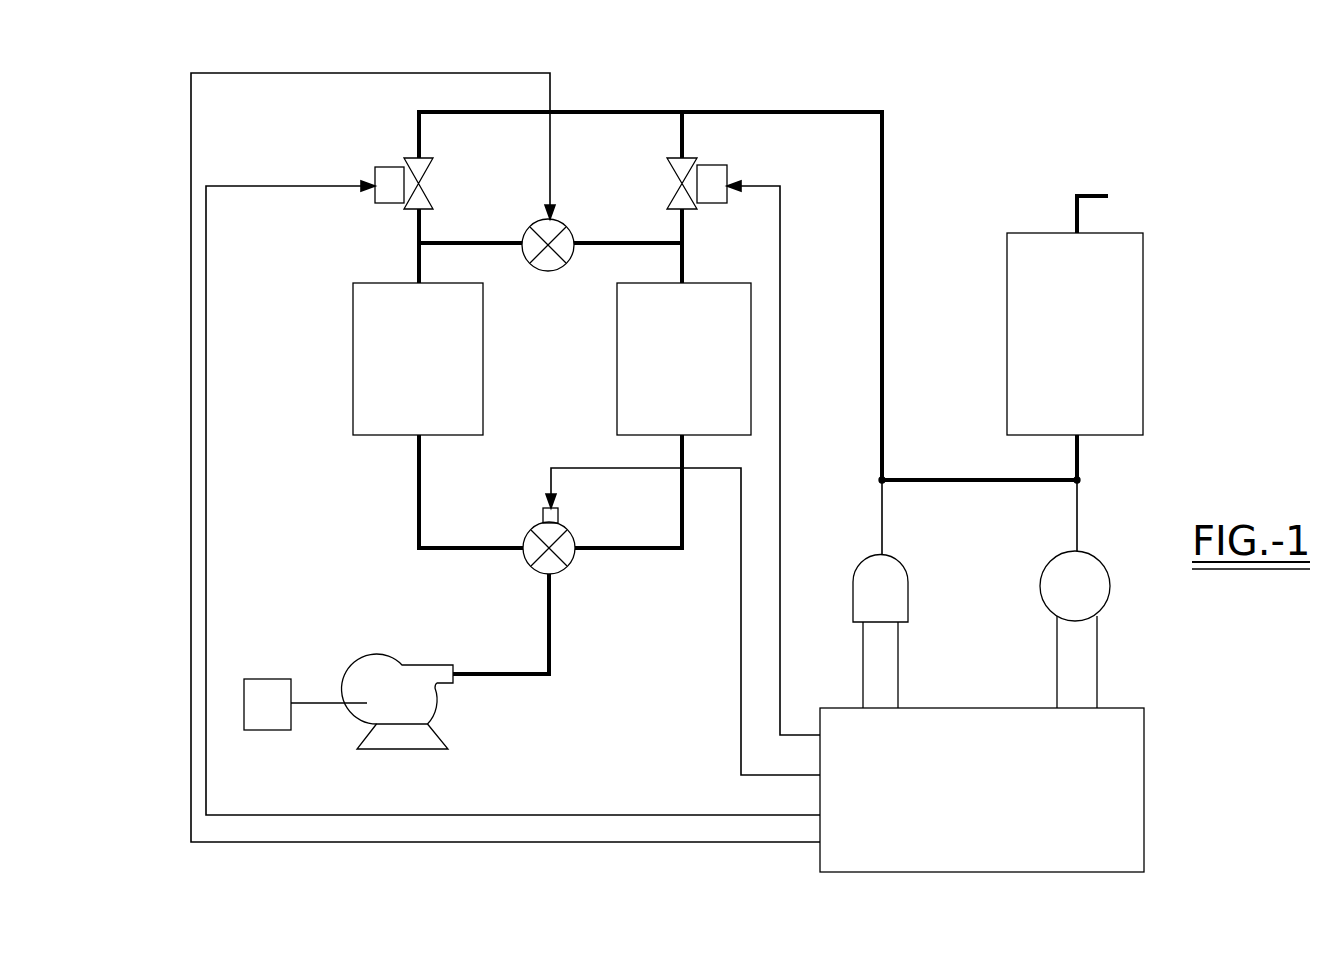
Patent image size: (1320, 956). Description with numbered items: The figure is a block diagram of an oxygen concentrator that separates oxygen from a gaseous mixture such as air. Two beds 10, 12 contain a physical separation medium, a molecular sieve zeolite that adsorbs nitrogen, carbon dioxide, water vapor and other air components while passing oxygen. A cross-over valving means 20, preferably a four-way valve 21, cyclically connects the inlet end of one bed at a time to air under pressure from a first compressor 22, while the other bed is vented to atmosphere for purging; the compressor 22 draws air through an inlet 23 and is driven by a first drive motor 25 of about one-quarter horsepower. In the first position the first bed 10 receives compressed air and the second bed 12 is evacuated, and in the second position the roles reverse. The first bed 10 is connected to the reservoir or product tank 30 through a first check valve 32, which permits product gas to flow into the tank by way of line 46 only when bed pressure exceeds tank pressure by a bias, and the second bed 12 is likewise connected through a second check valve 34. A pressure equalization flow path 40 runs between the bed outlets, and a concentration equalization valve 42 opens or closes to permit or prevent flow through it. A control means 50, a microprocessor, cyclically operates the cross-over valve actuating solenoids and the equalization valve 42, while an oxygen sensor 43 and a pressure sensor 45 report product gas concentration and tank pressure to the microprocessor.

The first bed 10 is at (353, 355).
The second bed 12 is at (617, 355).
The cross-over valving means 20 is at (521, 578).
The four-way valve 21 is at (567, 564).
The first compressor 22 is at (398, 665).
The inlet 23 is at (260, 679).
The first drive motor 25 is at (418, 749).
The product tank 30 is at (1143, 353).
The first check valve 32 is at (433, 178).
The second check valve 34 is at (667, 181).
The pressure equalization flow path 40 is at (455, 212).
The concentration equalization valve 42 is at (556, 270).
The oxygen sensor 43 is at (880, 632).
The pressure sensor 45 is at (1075, 629).
The line 46 is at (884, 218).
The control means 50 is at (1145, 787).